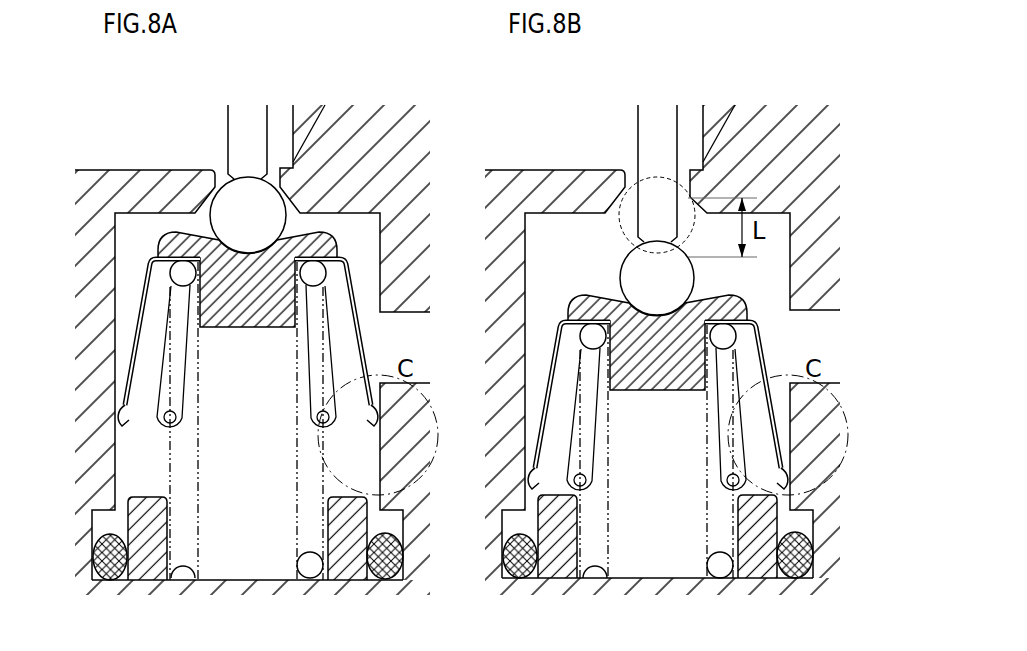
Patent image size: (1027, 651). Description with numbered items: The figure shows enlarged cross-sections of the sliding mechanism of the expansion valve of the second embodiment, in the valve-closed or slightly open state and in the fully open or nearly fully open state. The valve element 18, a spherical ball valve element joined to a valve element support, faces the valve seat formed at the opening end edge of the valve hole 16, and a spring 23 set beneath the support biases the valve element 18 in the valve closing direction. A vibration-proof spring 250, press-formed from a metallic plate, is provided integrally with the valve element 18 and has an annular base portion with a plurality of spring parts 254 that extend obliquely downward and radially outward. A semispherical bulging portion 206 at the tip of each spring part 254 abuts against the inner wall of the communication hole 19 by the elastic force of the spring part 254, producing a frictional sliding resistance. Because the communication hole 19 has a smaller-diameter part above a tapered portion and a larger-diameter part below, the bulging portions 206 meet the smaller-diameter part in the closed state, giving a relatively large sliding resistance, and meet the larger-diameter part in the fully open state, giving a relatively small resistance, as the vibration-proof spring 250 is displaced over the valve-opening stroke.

In FIG. 8A, the valve hole 16 is at (215, 172).
In FIG. 8B, the valve hole 16 is at (615, 170).
In FIG. 8A, the valve element 18 is at (198, 202).
In FIG. 8B, the valve element 18 is at (627, 263).
In FIG. 8A, the communication hole 19 is at (372, 468).
In FIG. 8B, the communication hole 19 is at (527, 424).
In FIG. 8A, the spring 23 is at (328, 481).
In FIG. 8B, the spring 23 is at (580, 387).
In FIG. 8A, the bulging portion 206 is at (362, 372).
In FIG. 8B, the bulging portion 206 is at (658, 405).
In FIG. 8A, the vibration-proof spring 250 is at (347, 248).
In FIG. 8B, the vibration-proof spring 250 is at (547, 314).
In FIG. 8A, the spring part 254 is at (345, 262).
In FIG. 8B, the spring part 254 is at (557, 348).